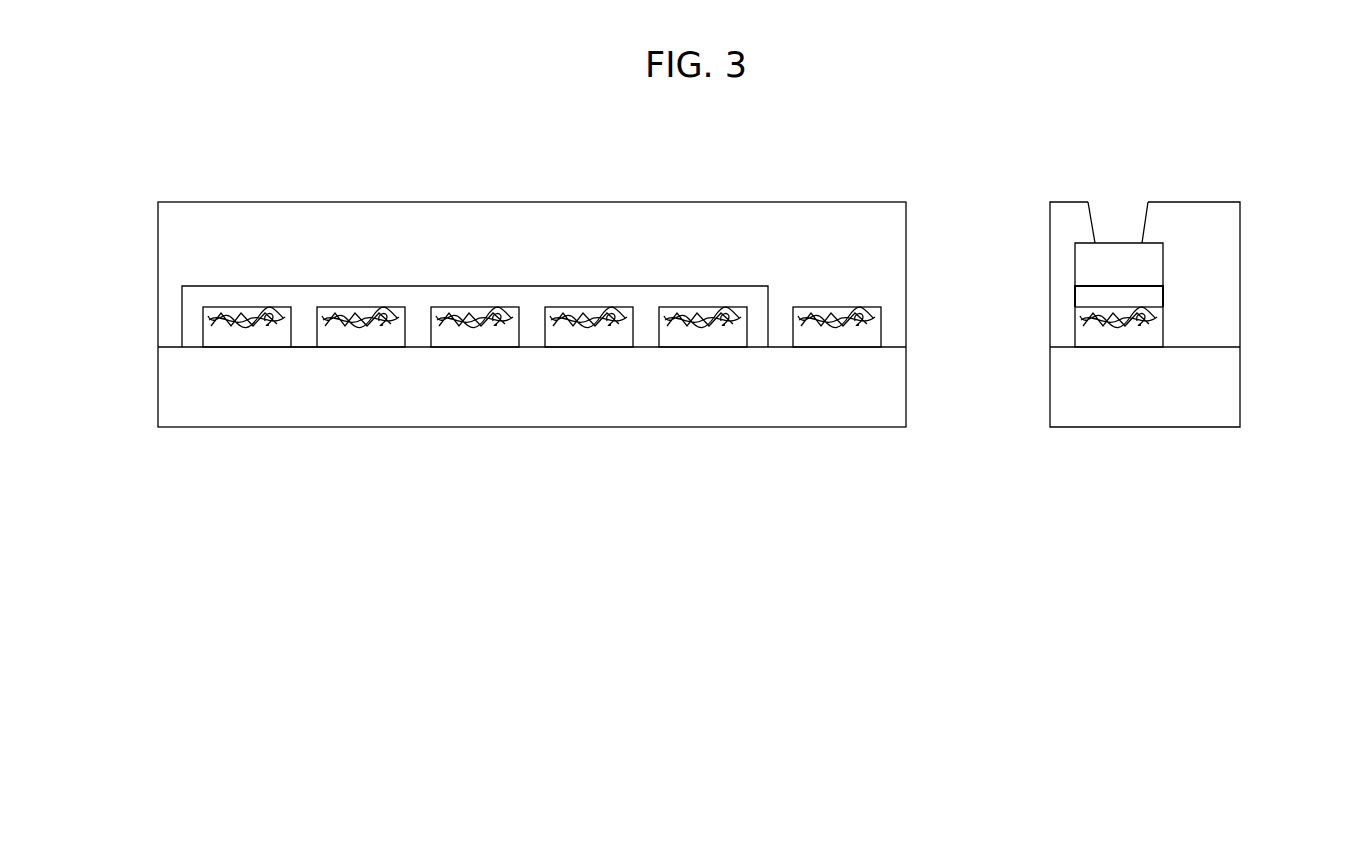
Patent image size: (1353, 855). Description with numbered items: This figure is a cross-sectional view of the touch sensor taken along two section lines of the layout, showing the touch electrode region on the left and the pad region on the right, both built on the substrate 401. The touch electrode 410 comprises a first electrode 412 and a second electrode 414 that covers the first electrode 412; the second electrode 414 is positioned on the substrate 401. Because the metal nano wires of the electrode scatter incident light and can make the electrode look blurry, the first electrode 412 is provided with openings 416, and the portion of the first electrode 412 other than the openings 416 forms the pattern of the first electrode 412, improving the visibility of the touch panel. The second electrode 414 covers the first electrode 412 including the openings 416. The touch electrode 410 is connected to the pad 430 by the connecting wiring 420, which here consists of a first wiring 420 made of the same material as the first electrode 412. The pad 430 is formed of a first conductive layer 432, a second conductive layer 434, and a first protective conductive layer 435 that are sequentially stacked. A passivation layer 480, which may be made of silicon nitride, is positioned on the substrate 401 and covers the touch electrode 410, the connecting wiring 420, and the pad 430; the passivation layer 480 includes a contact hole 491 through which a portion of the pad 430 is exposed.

The substrate 401 is at (469, 462).
The touch electrode 410 is at (473, 411).
The first electrode 412 is at (243, 477).
The second electrode 414 is at (198, 477).
The opening 416 is at (305, 354).
The connecting wiring 420 is at (817, 462).
The pad 430 is at (1135, 403).
The first conductive layer 432 is at (1127, 325).
The second conductive layer 434 is at (1176, 503).
The first protective conductive layer 435 is at (1107, 503).
The passivation layer 480 is at (1190, 212).
The contact hole 491 is at (1093, 219).